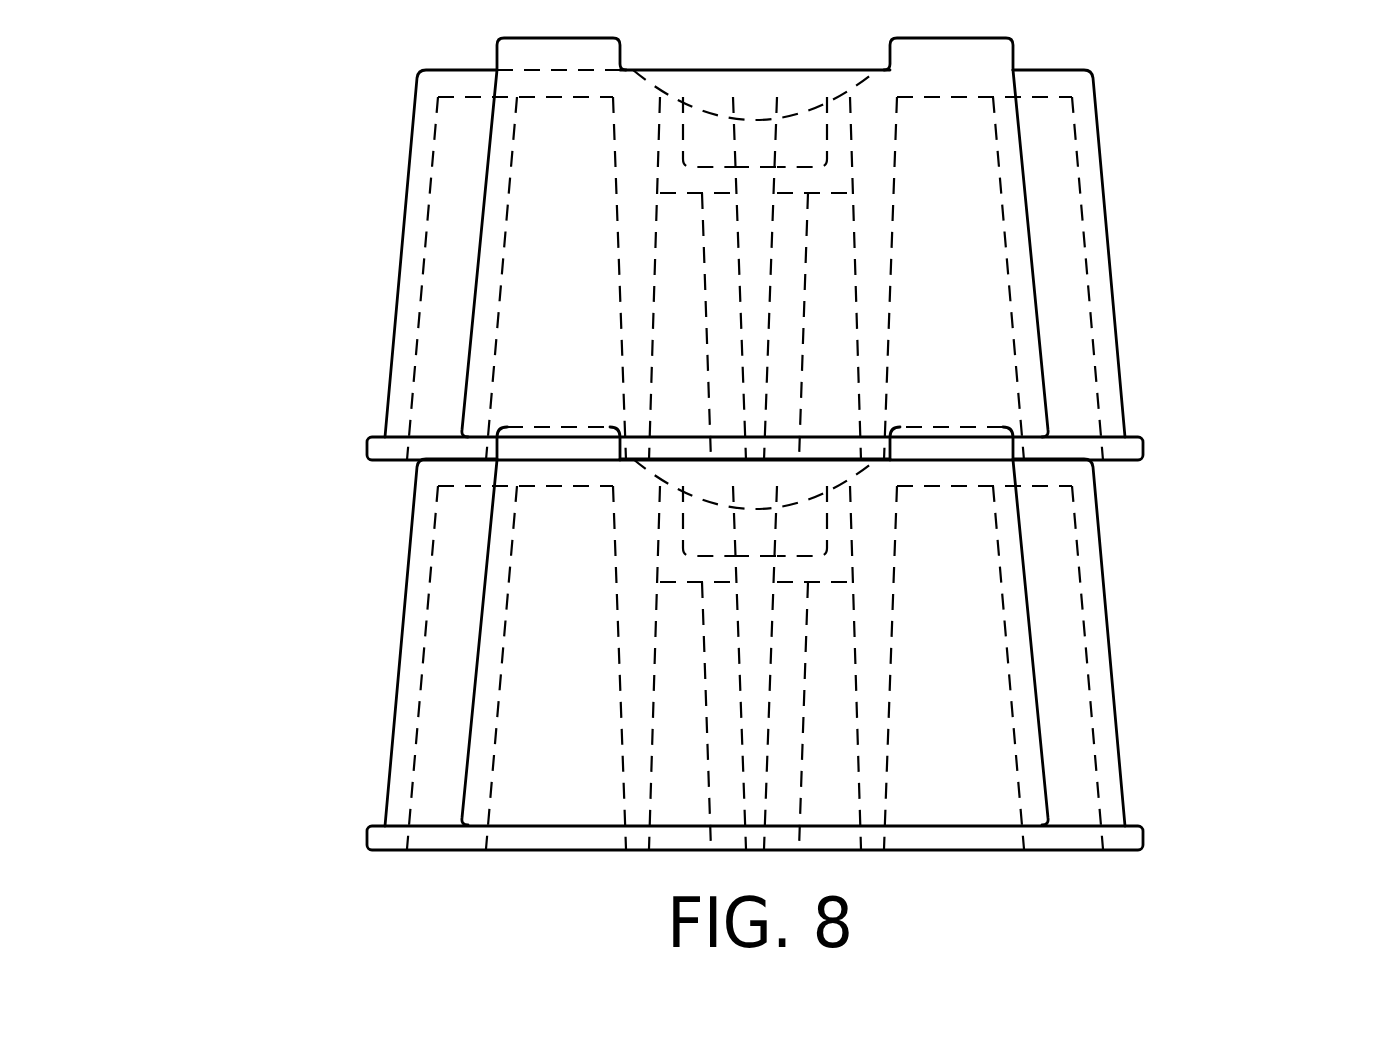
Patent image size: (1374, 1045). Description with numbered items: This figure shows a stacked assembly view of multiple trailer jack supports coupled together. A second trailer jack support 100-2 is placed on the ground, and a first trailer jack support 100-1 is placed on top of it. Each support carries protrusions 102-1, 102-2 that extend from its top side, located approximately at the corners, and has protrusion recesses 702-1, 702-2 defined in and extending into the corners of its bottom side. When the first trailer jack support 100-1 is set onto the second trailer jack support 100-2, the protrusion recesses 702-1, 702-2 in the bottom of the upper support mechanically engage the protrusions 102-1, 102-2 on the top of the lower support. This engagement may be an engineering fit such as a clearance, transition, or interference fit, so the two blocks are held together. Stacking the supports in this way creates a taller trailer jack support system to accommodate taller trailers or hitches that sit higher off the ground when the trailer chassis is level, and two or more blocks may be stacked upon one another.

The first trailer jack support 100-1 is at (338, 257).
The second trailer jack support 100-2 is at (338, 614).
The protrusion 102-1 is at (552, 52).
The protrusion 102-2 is at (958, 52).
The protrusion recess 702-1 is at (541, 357).
The protrusion recess 702-2 is at (969, 357).